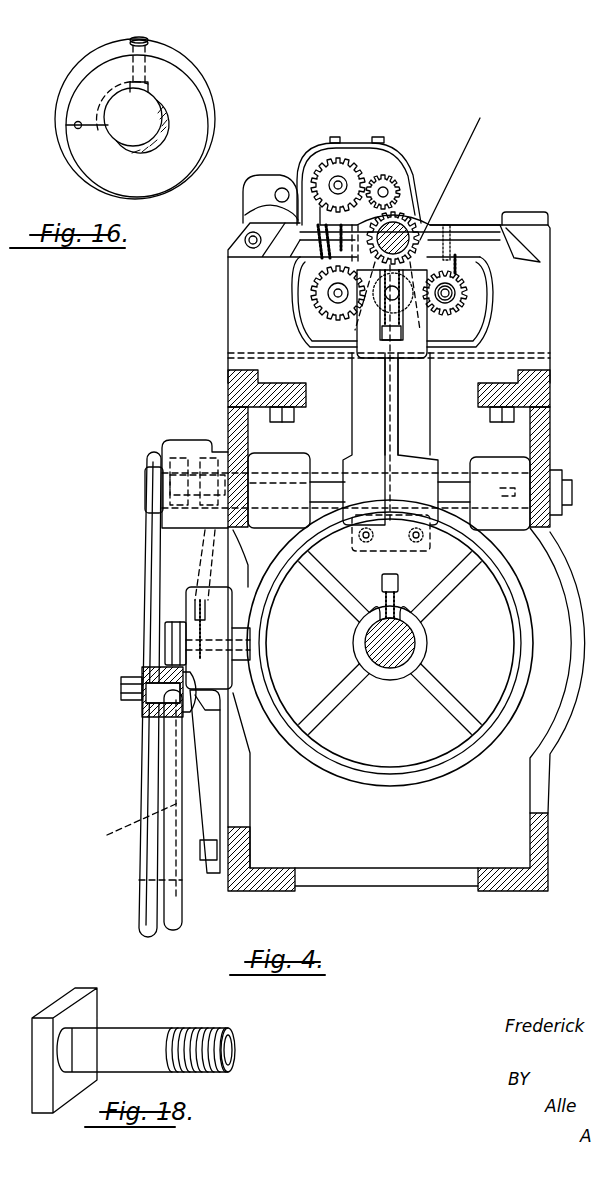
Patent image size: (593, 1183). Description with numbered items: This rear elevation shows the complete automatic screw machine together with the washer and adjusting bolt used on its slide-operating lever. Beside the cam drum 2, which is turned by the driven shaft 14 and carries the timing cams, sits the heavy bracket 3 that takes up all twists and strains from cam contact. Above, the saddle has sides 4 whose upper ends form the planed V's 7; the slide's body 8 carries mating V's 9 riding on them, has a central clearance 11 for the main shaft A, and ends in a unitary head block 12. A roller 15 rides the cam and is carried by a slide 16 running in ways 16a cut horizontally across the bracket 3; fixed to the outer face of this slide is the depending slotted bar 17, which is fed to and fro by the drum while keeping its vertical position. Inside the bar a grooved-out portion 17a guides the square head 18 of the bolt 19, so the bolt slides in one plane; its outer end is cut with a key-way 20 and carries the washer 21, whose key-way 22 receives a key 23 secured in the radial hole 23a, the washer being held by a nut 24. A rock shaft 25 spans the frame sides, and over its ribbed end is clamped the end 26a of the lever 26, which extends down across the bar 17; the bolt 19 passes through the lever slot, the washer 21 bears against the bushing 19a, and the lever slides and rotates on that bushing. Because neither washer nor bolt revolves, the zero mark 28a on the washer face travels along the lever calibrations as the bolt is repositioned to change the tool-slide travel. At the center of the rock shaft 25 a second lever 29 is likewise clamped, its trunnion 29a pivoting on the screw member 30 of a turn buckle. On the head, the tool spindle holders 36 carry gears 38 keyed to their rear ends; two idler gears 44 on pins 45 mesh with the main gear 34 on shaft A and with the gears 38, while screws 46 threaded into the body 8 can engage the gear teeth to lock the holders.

In FIG. 4, the cam drum 2 is at (520, 625).
In FIG. 4, the heavy bracket 3 is at (294, 144).
In FIG. 4, the sides 4 is at (228, 300).
In FIG. 4, the planed V's 7 is at (246, 243).
In FIG. 4, the body 8 is at (460, 232).
In FIG. 4, the V's 9 is at (505, 235).
In FIG. 4, the central clearance 11 is at (425, 232).
In FIG. 4, the head block 12 is at (334, 180).
In FIG. 4, the driven shaft 14 is at (380, 660).
In FIG. 4, the roller 15 is at (222, 640).
In FIG. 4, the slide 16 is at (215, 620).
In FIG. 4, the ways 16a is at (222, 700).
In FIG. 4, the slotted bar 17 is at (180, 895).
In FIG. 4, the grooved-out portion 17a is at (123, 826).
In FIG. 4, the head 18 is at (183, 712).
In FIG. 18, the head 18 is at (56, 1008).
In FIG. 4, the bolt 19 is at (160, 692).
In FIG. 18, the bolt 19 is at (108, 1040).
In FIG. 4, the bushing 19a is at (150, 712).
In FIG. 18, the key-way 20 is at (195, 1032).
In FIG. 16, the washer 21 is at (92, 162).
In FIG. 4, the washer 21 is at (145, 670).
In FIG. 16, the key-way 22 is at (148, 88).
In FIG. 4, the key 23 is at (142, 660).
In FIG. 16, the radial hole 23a is at (152, 46).
In FIG. 4, the nut 24 is at (121, 690).
In FIG. 4, the rock shaft 25 is at (280, 470).
In FIG. 4, the lever 26 is at (140, 560).
In FIG. 4, the end 26a is at (175, 442).
In FIG. 16, the mark or zero 28a is at (76, 128).
In FIG. 4, the lever 29 is at (430, 435).
In FIG. 4, the trunnion 29a is at (410, 330).
In FIG. 4, the screw member 30 is at (378, 392).
In FIG. 4, the main gear 34 is at (430, 225).
In FIG. 4, the tool spindle holders 36 is at (450, 295).
In FIG. 4, the gears 38 is at (384, 188).
In FIG. 4, the idler gears 44 is at (386, 200).
In FIG. 4, the pins 45 is at (456, 168).
In FIG. 4, the screws 46 is at (352, 190).
In FIG. 4, the main shaft A is at (415, 228).